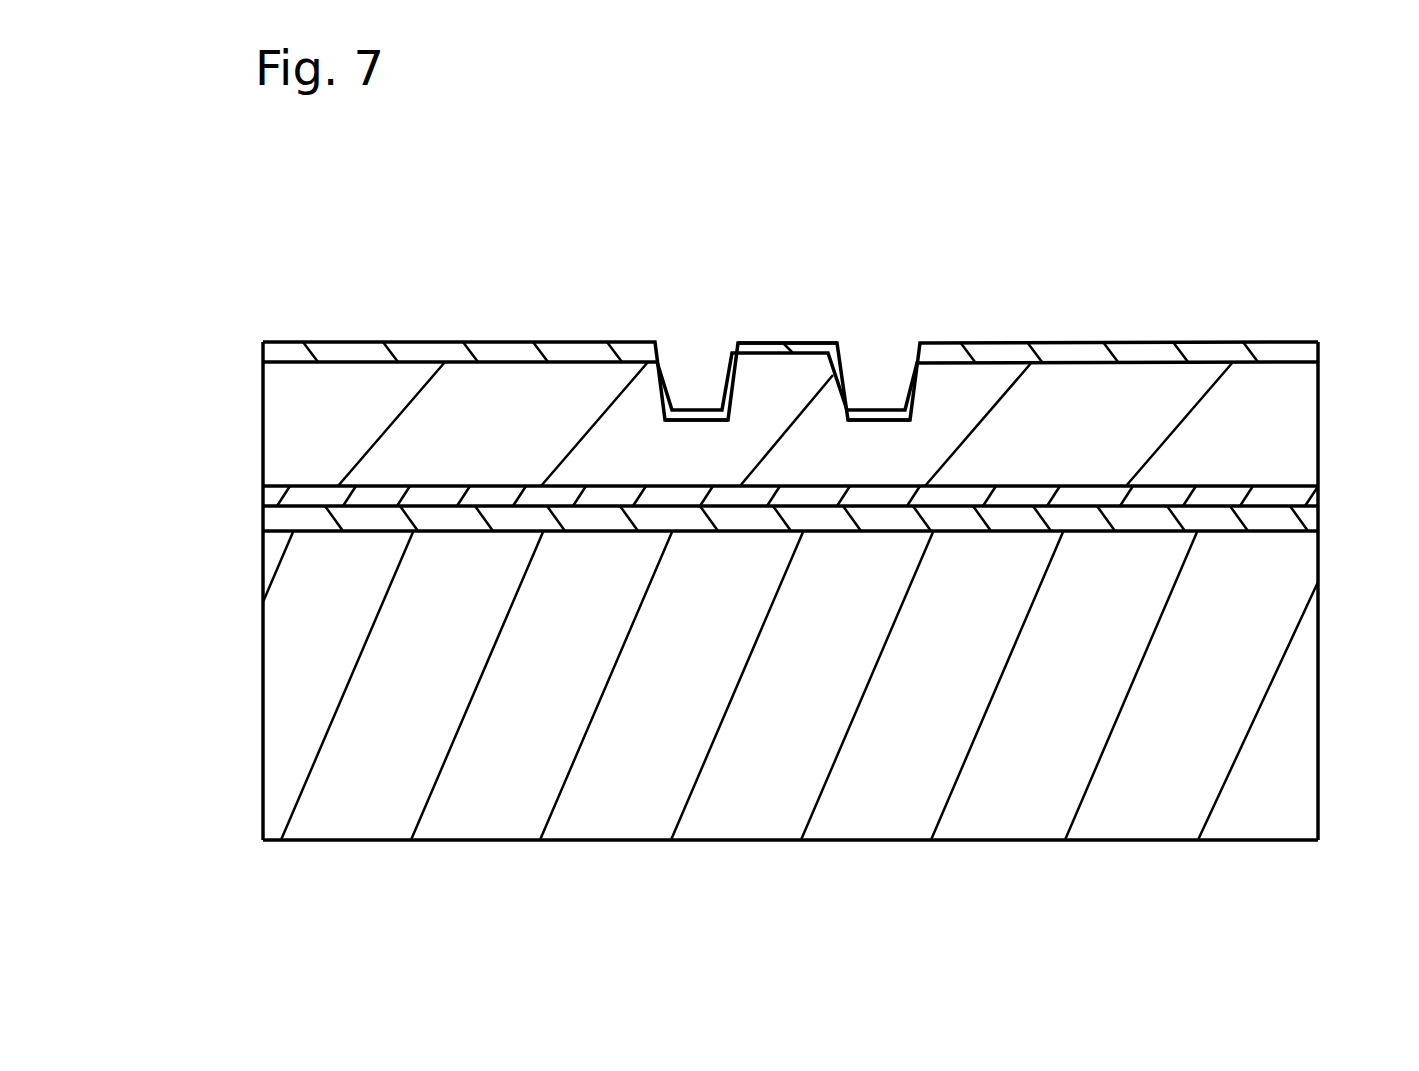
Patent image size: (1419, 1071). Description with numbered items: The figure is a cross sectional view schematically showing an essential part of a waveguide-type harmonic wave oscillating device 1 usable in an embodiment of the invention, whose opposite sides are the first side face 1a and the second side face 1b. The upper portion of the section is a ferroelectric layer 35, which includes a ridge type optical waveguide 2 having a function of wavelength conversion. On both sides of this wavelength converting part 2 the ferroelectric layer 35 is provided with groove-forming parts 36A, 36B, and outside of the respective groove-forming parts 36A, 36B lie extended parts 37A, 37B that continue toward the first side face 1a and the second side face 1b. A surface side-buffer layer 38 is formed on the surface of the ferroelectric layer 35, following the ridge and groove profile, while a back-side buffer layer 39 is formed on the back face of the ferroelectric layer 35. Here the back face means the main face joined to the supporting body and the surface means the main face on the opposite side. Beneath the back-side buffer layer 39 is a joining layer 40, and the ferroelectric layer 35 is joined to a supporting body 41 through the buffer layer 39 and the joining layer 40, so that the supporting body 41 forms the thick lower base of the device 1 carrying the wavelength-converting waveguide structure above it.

The waveguide-type harmonic wave oscillating device 1 is at (1233, 288).
The first side face 1a is at (262, 428).
The second side face 1b is at (1320, 433).
The ridge type optical waveguide 2 is at (800, 370).
The ferroelectric layer 35 is at (251, 382).
The groove-forming part 36A is at (700, 405).
The groove-forming part 36B is at (868, 402).
The extended part 37A is at (518, 388).
The extended part 37B is at (1092, 385).
The surface side-buffer layer 38 is at (415, 353).
The back-side buffer layer 39 is at (262, 493).
The joining layer 40 is at (262, 520).
The supporting body 41 is at (273, 702).